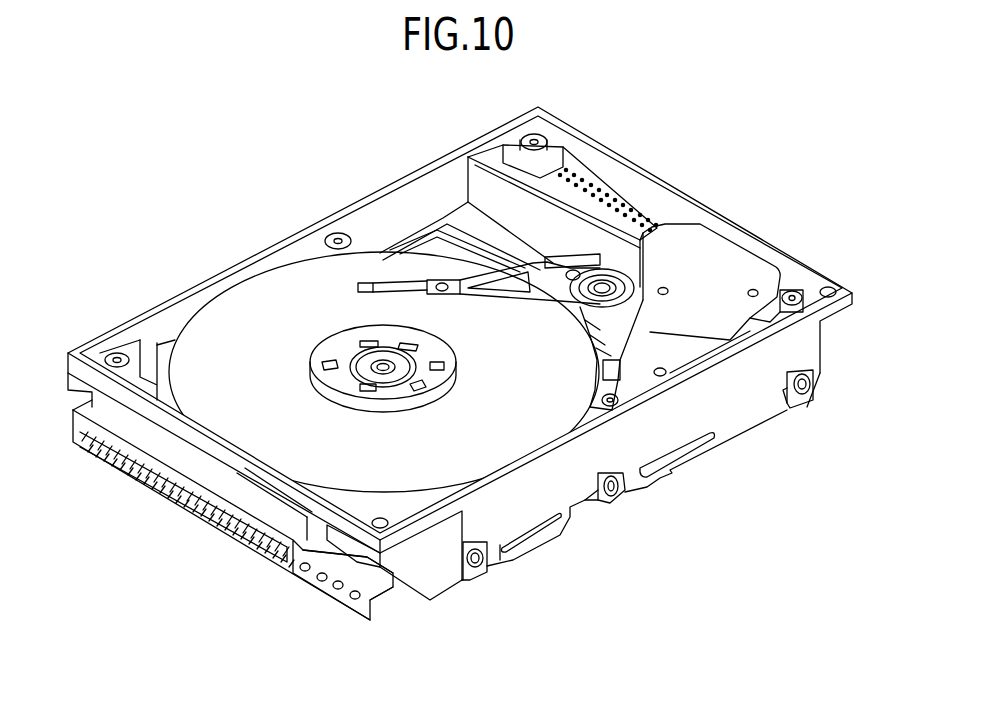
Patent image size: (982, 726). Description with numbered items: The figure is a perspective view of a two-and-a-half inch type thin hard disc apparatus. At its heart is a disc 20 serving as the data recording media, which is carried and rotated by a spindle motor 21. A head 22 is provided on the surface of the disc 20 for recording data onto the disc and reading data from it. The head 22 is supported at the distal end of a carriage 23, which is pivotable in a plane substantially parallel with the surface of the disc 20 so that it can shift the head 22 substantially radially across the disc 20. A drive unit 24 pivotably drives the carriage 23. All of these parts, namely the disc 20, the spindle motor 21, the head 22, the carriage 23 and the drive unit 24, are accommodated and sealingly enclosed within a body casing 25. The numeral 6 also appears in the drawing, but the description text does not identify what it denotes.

The disc 20 is at (250, 410).
The spindle motor 21 is at (377, 377).
The disk 6 is at (322, 352).
The head 22 is at (387, 283).
The carriage 23 is at (540, 303).
The drive unit 24 is at (718, 268).
The body casing 25 is at (513, 507).